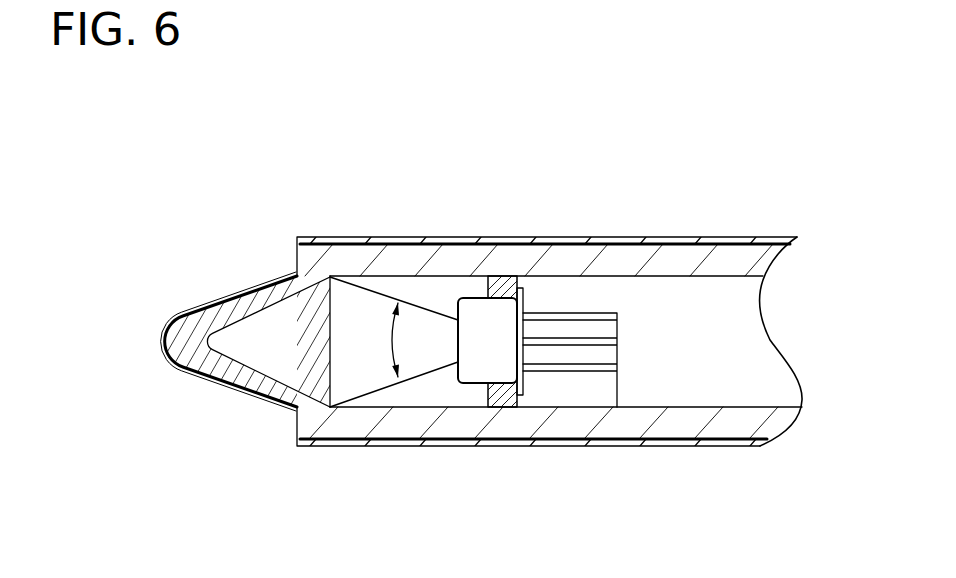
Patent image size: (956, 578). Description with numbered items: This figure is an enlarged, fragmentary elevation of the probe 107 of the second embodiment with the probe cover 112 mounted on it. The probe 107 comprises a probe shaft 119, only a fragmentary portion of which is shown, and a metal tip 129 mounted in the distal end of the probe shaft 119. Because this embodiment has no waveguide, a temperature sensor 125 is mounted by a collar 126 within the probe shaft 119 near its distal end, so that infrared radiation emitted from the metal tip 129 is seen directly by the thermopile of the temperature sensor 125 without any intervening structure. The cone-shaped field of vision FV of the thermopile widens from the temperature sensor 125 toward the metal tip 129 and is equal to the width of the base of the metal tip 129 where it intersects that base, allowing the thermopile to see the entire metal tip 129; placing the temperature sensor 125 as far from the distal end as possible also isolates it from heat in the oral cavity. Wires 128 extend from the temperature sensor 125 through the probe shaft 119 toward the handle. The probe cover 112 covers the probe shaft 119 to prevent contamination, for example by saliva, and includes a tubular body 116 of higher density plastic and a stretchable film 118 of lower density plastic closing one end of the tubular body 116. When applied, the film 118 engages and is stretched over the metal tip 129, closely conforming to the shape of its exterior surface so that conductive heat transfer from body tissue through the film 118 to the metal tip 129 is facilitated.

The probe 107 is at (617, 425).
The probe cover 112 is at (718, 237).
The tubular body 116 is at (383, 237).
The stretchable film 118 is at (203, 308).
The probe shaft 119 is at (733, 257).
The temperature sensor 125 is at (465, 292).
The collar 126 is at (502, 288).
The wires 128 is at (607, 363).
The metal tip 129 is at (245, 388).
The field of vision FV is at (398, 378).